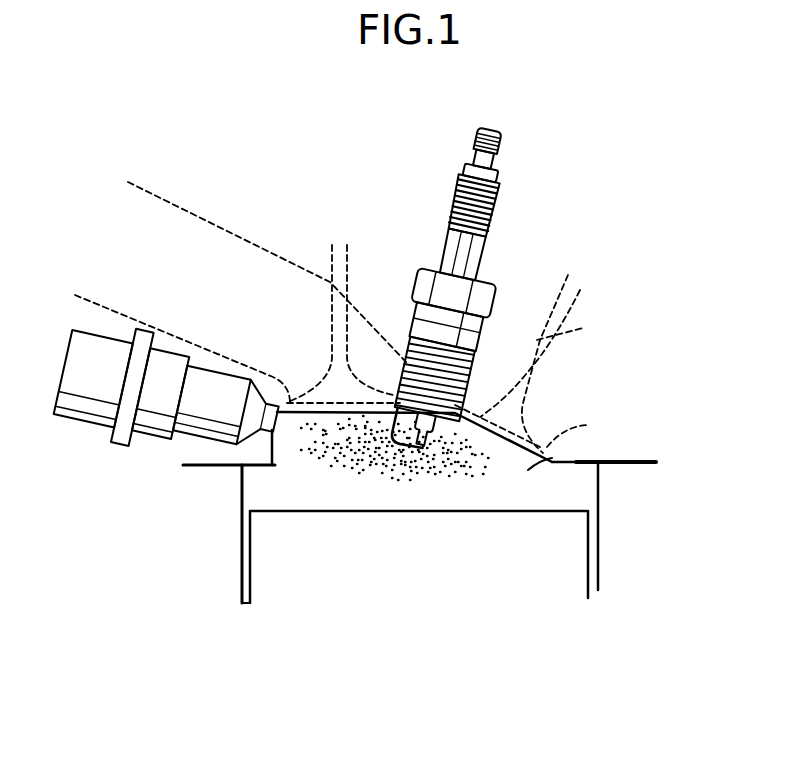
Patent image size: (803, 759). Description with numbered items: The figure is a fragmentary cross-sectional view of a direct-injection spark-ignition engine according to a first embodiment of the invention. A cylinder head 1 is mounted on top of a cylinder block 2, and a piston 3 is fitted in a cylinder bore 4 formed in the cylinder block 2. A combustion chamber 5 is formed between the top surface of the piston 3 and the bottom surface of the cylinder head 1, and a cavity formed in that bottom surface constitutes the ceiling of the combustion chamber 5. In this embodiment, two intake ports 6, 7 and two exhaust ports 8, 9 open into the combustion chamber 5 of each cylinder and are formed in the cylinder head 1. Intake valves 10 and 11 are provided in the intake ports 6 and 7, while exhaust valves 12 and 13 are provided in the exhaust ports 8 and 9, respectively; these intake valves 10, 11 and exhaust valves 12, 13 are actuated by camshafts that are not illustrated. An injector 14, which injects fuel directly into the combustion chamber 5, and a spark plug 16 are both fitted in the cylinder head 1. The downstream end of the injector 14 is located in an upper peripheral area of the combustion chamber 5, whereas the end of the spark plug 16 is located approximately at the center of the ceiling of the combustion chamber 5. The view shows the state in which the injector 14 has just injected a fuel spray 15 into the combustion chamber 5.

The cylinder head 1 is at (575, 466).
The cylinder block 2 is at (608, 533).
The piston 3 is at (600, 587).
The cylinder bore 4 is at (600, 570).
The combustion chamber 5 is at (552, 462).
The intake port 6 is at (226, 222).
The intake port 7 is at (237, 349).
The exhaust port 8 is at (457, 403).
The exhaust port 9 is at (560, 334).
The intake valve 10 is at (347, 275).
The intake valve 11 is at (370, 320).
The exhaust valve 12 is at (537, 340).
The exhaust valve 13 is at (530, 353).
The injector 14 is at (80, 422).
The fuel spray 15 is at (380, 437).
The spark plug 16 is at (505, 190).